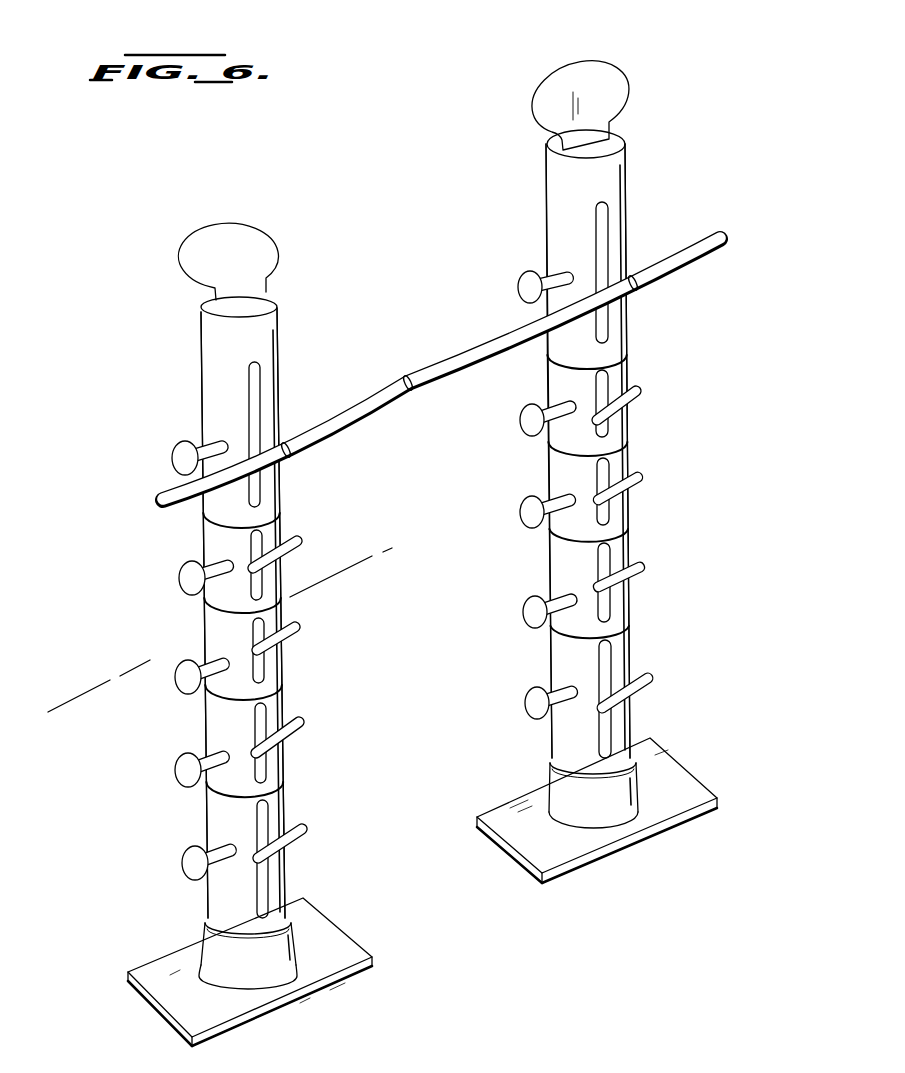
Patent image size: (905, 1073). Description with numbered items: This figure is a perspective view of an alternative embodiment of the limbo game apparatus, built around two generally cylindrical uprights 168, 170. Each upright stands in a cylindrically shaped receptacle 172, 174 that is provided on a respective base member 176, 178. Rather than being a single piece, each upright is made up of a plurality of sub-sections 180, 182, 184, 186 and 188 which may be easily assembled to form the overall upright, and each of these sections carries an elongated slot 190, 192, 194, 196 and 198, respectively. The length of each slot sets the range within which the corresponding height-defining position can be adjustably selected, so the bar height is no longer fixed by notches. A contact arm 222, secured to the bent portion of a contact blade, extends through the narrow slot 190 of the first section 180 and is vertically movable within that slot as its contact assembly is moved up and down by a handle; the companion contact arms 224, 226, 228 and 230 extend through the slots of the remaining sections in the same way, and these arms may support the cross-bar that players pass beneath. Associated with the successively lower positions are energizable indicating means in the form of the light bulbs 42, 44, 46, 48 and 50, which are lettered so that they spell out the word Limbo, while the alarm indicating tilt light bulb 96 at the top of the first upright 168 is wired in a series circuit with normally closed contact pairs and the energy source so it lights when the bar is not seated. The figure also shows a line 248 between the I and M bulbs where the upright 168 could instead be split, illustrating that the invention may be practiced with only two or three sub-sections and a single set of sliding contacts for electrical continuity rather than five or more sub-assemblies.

The light bulb 42 is at (171, 461).
The light bulb 44 is at (178, 581).
The light bulb 46 is at (174, 683).
The light bulb 48 is at (174, 776).
The light bulb 50 is at (181, 868).
The tilt light bulb 96 is at (236, 226).
The upright 168 is at (283, 364).
The upright 170 is at (630, 173).
The receptacle 172 is at (292, 928).
The receptacle 174 is at (638, 787).
The base member 176 is at (345, 943).
The base member 178 is at (668, 760).
The sub-section 180 is at (197, 393).
The sub-section 182 is at (200, 533).
The sub-section 184 is at (205, 627).
The sub-section 186 is at (205, 712).
The sub-section 188 is at (207, 810).
The elongated slot 190 is at (261, 388).
The elongated slot 192 is at (263, 540).
The elongated slot 194 is at (265, 667).
The elongated slot 196 is at (266, 768).
The elongated slot 198 is at (266, 815).
The contact arm 222 is at (294, 456).
The contact arm 224 is at (301, 550).
The contact arm 226 is at (298, 636).
The contact arm 228 is at (303, 729).
The contact arm 230 is at (305, 838).
The split line 248 is at (220, 639).